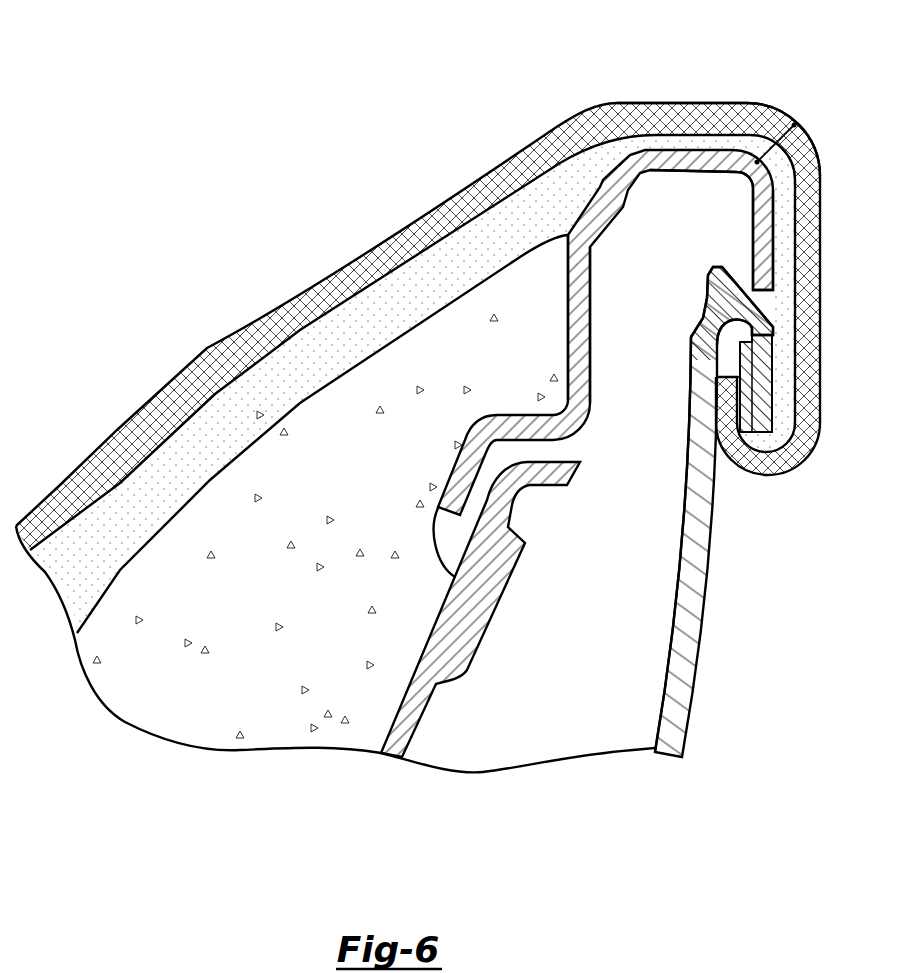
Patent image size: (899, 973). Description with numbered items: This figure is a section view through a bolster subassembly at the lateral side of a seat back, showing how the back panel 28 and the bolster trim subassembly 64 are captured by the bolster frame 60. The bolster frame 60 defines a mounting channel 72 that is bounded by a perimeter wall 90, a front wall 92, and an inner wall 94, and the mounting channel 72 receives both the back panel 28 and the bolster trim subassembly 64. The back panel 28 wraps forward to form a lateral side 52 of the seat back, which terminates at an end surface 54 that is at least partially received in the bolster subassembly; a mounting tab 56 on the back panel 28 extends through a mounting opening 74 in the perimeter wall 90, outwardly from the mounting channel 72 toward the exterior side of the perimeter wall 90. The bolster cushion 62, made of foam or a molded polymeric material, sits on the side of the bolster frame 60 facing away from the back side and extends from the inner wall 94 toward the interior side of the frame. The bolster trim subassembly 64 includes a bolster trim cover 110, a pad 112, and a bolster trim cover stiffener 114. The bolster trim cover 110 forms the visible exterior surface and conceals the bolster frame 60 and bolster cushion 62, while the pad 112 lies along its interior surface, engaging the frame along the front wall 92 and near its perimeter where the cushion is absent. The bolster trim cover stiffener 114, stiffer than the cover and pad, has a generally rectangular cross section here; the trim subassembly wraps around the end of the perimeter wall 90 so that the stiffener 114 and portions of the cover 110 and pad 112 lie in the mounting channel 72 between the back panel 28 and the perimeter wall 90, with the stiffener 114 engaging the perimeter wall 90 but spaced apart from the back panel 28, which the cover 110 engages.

The back panel 28 is at (702, 552).
The lateral side 52 is at (690, 680).
The end surface 54 is at (723, 380).
The mounting tab 56 is at (770, 327).
The bolster frame 60 is at (577, 431).
The bolster cushion 62 is at (313, 484).
The bolster trim subassembly 64 is at (743, 101).
The mounting channel 72 is at (683, 311).
The mounting opening 74 is at (765, 298).
The perimeter wall 90 is at (752, 233).
The front wall 92 is at (683, 168).
The inner wall 94 is at (592, 287).
The bolster trim cover 110 is at (638, 103).
The pad 112 is at (358, 323).
The bolster trim cover stiffener 114 is at (752, 358).